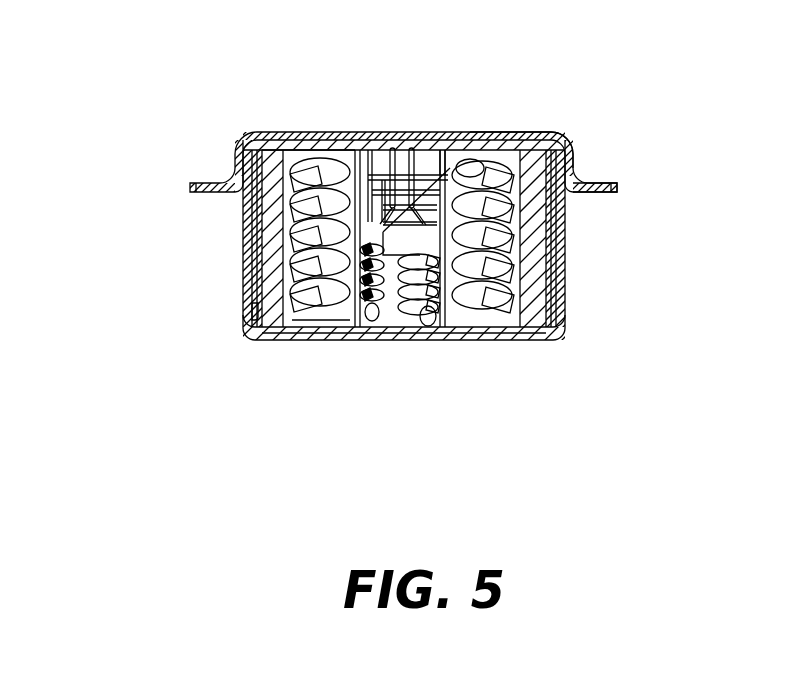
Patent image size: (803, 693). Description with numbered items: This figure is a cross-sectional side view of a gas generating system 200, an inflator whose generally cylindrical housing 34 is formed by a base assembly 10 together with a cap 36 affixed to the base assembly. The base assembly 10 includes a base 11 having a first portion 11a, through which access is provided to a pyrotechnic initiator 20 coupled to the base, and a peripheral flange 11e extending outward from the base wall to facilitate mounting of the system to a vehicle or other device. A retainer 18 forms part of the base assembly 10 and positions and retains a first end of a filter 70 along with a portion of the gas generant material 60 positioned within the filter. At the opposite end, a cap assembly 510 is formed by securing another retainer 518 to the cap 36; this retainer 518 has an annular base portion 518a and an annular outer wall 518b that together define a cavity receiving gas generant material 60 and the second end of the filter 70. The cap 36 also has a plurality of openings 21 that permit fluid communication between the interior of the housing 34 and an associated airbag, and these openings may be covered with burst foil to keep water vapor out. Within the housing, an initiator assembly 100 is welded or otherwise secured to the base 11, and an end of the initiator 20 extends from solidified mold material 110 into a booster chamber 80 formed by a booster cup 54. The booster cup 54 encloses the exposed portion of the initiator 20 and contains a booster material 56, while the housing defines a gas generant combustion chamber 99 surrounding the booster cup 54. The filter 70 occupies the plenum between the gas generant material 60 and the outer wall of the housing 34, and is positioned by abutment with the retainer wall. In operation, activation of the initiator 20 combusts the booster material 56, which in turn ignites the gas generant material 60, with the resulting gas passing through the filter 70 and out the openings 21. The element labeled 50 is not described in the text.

The gas generating system 200 is at (112, 187).
The base 11 is at (528, 128).
The first portion 11a is at (517, 130).
The peripheral flange 11e is at (596, 193).
The base assembly 10 is at (568, 143).
The cap assembly 510 is at (394, 344).
The filter 70 is at (263, 205).
The retainer 18 is at (297, 140).
The openings 21 is at (558, 273).
The cap 36 is at (556, 337).
The housing 34 is at (244, 341).
The retainer 518 is at (330, 338).
The annular base portion 518a is at (373, 334).
The annular outer wall 518b is at (258, 312).
The booster cup 54 is at (448, 310).
The gas generant combustion chamber 99 is at (295, 197).
The solidified mold material 110 is at (298, 258).
The booster material 56 is at (455, 150).
The gas generant material 60 is at (507, 283).
The initiator assembly 100 is at (432, 155).
The contact carrier 50 is at (375, 150).
The initiator 20 is at (410, 148).
The booster chamber 80 is at (403, 316).